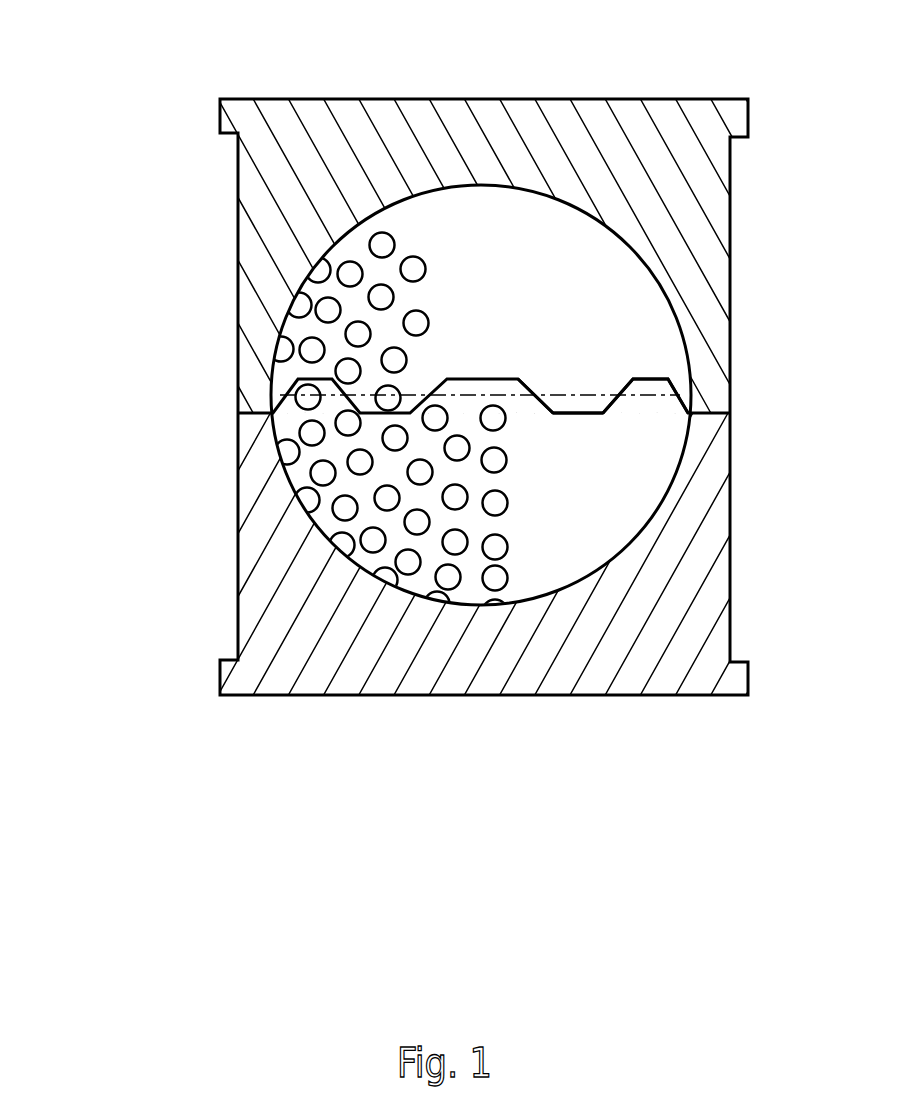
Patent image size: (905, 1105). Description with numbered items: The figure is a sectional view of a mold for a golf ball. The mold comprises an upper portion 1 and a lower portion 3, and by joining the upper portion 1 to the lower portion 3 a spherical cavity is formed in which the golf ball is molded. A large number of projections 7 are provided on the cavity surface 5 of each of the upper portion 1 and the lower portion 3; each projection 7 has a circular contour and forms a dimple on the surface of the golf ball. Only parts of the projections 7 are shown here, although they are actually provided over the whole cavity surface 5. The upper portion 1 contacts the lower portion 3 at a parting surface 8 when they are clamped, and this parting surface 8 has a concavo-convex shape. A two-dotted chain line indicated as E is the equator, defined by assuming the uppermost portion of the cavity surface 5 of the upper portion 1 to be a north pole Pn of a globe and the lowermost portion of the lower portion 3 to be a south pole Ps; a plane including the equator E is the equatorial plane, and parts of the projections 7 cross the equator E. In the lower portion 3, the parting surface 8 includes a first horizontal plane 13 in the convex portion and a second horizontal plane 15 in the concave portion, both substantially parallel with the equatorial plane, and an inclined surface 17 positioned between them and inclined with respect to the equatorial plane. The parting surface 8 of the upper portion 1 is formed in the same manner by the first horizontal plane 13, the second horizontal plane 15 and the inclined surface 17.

The upper portion 1 is at (189, 199).
The lower portion 3 is at (170, 584).
The cavity surface 5 is at (625, 246).
The projections 7 is at (297, 310).
The parting surface 8 is at (587, 412).
The first horizontal plane 13 is at (457, 378).
The second horizontal plane 15 is at (568, 417).
The inclined surface 17 is at (530, 387).
The north pole Pn is at (481, 185).
The south pole Ps is at (487, 605).
The equator E is at (638, 398).